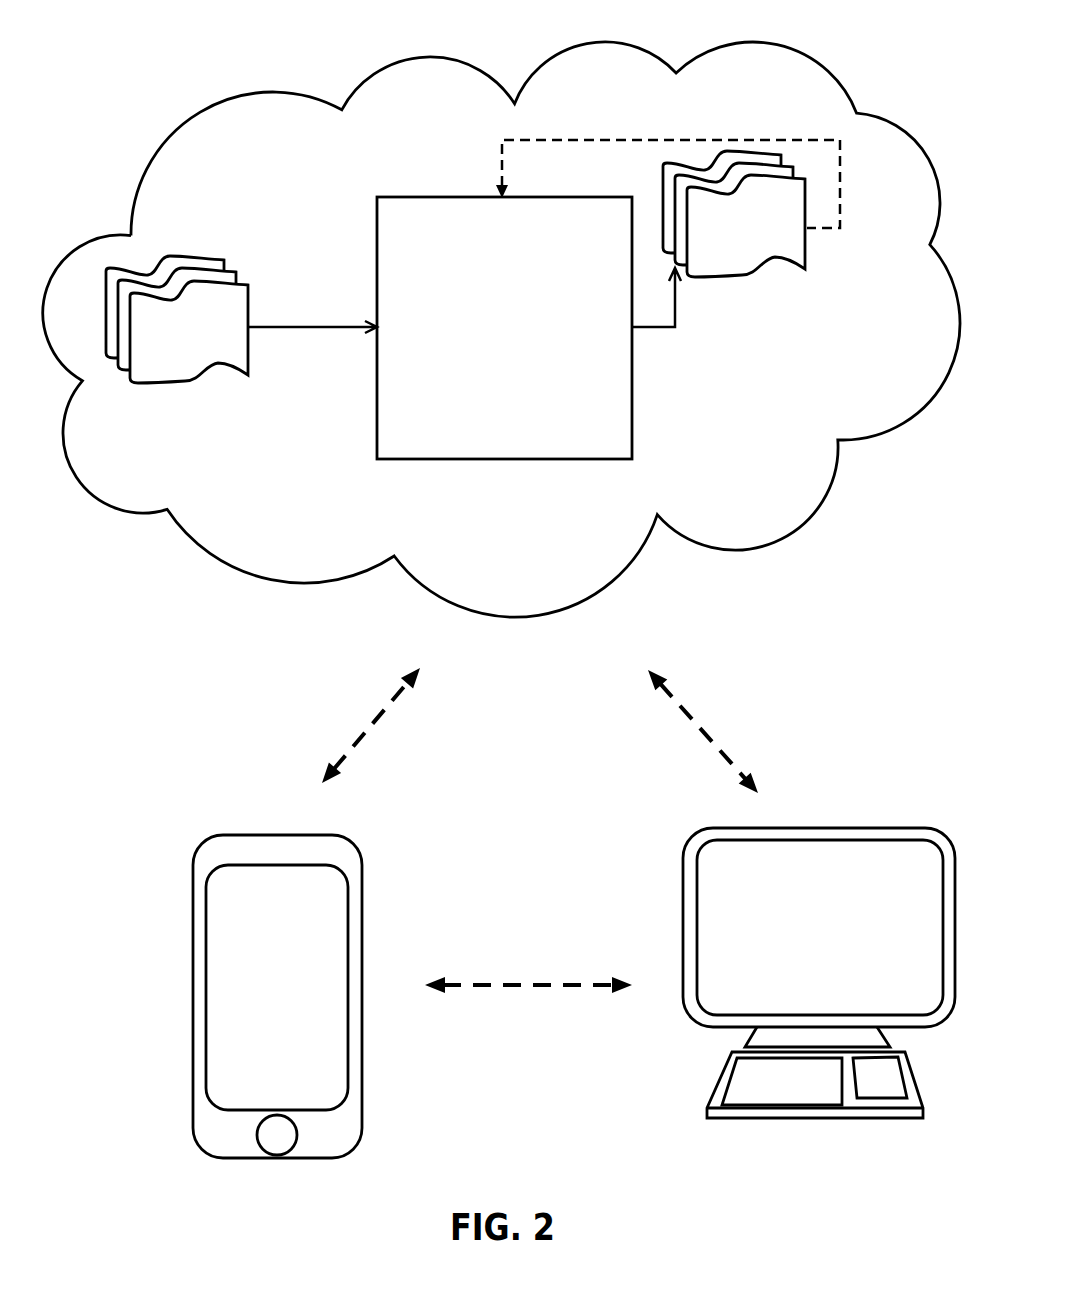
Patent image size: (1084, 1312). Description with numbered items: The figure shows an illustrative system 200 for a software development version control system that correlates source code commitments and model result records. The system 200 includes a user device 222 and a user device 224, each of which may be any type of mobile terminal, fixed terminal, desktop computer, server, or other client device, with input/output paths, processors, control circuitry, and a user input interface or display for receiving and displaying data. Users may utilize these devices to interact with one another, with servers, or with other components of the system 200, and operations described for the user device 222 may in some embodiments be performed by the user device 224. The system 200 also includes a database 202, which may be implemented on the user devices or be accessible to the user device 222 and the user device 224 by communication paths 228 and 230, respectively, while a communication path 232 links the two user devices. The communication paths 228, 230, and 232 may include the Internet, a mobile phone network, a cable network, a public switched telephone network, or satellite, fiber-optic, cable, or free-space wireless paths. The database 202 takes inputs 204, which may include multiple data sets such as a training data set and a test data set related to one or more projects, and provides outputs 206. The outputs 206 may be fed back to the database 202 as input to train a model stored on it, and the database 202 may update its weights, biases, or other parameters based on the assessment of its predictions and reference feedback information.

The system 200 is at (518, 34).
The database 202 is at (523, 340).
The inputs 204 is at (197, 256).
The outputs 206 is at (787, 266).
The user device 222 is at (271, 797).
The user device 224 is at (822, 807).
The communication path 228 is at (347, 683).
The communication path 230 is at (723, 671).
The communication path 232 is at (528, 944).